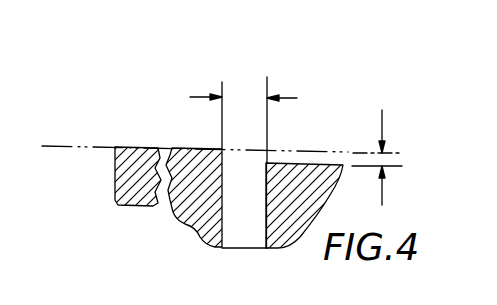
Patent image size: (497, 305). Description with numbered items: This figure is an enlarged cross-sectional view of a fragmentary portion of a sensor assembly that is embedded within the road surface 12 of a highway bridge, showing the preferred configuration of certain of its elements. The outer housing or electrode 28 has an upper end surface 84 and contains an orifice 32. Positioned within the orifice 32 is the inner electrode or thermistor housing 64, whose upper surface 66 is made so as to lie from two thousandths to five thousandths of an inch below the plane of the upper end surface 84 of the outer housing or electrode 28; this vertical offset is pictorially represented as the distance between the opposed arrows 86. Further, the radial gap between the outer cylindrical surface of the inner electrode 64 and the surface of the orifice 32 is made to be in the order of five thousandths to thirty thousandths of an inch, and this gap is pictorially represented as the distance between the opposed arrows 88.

The road surface 12 is at (63, 145).
The outer housing or electrode 28 is at (108, 194).
The upper end surface 84 is at (183, 147).
The upper surface 66 is at (307, 163).
The opposed arrows 88 is at (290, 98).
The opposed arrows 86 is at (382, 195).
The orifice 32 is at (222, 228).
The inner electrode or thermistor housing 64 is at (258, 221).